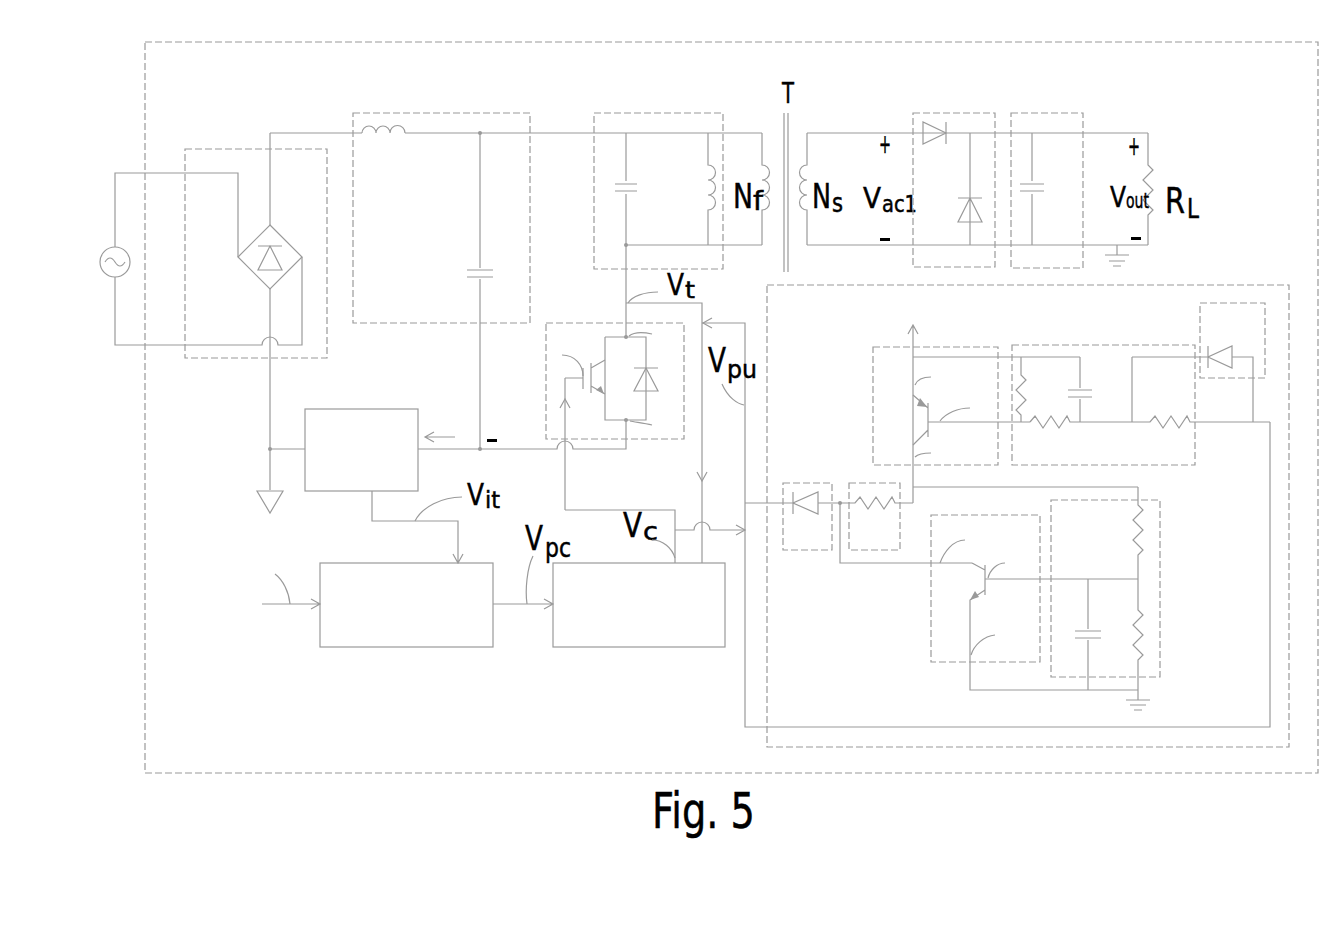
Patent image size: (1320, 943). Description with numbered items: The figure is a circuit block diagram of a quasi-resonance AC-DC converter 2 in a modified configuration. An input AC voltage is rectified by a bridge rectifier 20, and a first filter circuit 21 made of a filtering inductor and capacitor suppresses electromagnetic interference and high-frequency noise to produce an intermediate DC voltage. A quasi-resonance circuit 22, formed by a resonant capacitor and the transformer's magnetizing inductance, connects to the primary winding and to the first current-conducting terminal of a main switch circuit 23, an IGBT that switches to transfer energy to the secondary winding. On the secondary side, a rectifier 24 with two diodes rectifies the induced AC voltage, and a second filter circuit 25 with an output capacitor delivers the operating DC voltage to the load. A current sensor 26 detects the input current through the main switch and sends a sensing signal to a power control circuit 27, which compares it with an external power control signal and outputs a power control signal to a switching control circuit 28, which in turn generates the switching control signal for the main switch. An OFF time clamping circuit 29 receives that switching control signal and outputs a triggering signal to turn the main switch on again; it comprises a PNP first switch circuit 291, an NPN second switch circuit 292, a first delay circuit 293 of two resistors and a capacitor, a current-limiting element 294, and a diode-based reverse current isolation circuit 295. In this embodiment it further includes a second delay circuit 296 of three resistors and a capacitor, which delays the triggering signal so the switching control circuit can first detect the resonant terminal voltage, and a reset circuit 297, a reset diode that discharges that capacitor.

The quasi-resonance AC-DC converter 2 is at (145, 53).
The bridge rectifier 20 is at (197, 149).
The first filter circuit 21 is at (440, 113).
The quasi-resonance circuit 22 is at (688, 113).
The main switch circuit 23 is at (598, 323).
The rectifier 24 is at (955, 113).
The second filter circuit 25 is at (1040, 113).
The current sensor 26 is at (330, 409).
The power control circuit 27 is at (405, 647).
The switching control circuit 28 is at (648, 647).
The OFF time clamping circuit 29 is at (1017, 486).
The first switch circuit 291 is at (873, 360).
The second switch circuit 292 is at (931, 632).
The first delay circuit 293 is at (1163, 524).
The current-limiting element 294 is at (877, 551).
The reverse current isolation circuit 295 is at (795, 483).
The second delay circuit 296 is at (1085, 345).
The reset circuit 297 is at (1200, 326).